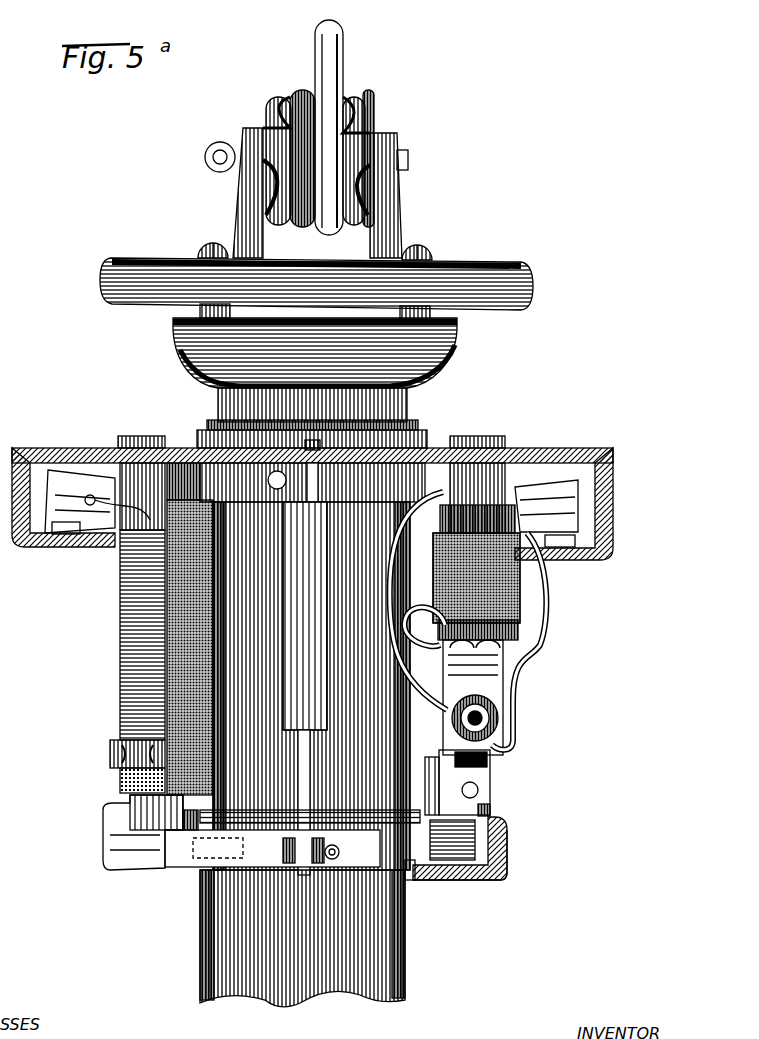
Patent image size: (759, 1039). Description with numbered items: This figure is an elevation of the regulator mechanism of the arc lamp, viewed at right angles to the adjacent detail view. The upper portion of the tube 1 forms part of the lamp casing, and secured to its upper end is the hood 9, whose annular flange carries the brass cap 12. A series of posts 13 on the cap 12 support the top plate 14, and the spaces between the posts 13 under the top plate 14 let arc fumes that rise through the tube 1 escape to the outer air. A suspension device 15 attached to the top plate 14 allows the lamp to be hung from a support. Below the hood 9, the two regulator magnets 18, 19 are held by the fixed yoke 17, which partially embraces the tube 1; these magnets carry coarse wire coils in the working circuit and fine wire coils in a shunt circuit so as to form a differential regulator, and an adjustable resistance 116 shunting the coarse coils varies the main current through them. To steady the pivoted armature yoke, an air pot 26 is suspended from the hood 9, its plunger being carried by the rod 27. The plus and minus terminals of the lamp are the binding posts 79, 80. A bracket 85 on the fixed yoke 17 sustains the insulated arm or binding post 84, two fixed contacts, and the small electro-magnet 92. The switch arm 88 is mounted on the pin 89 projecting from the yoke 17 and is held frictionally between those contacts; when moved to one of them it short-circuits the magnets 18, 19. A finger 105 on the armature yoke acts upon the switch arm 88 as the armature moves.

The tube 1 is at (272, 985).
The hood 9 is at (553, 463).
The cap 12 is at (192, 365).
The posts 13 is at (200, 312).
The top plate 14 is at (457, 267).
The suspension device 15 is at (331, 72).
The yoke 17 is at (412, 872).
The magnet 18 is at (135, 685).
The magnet 19 is at (520, 600).
The air pot 26 is at (292, 600).
The rod 27 is at (298, 758).
The plus terminal binding post 79 is at (63, 483).
The minus terminal binding post 80 is at (565, 500).
The arm or binding post 84 is at (498, 680).
The bracket 85 is at (440, 775).
The switch arm 88 is at (492, 790).
The pin 89 is at (505, 850).
The electro-magnet 92 is at (515, 585).
The finger 105 is at (490, 815).
The adjustable resistance 116 is at (122, 614).